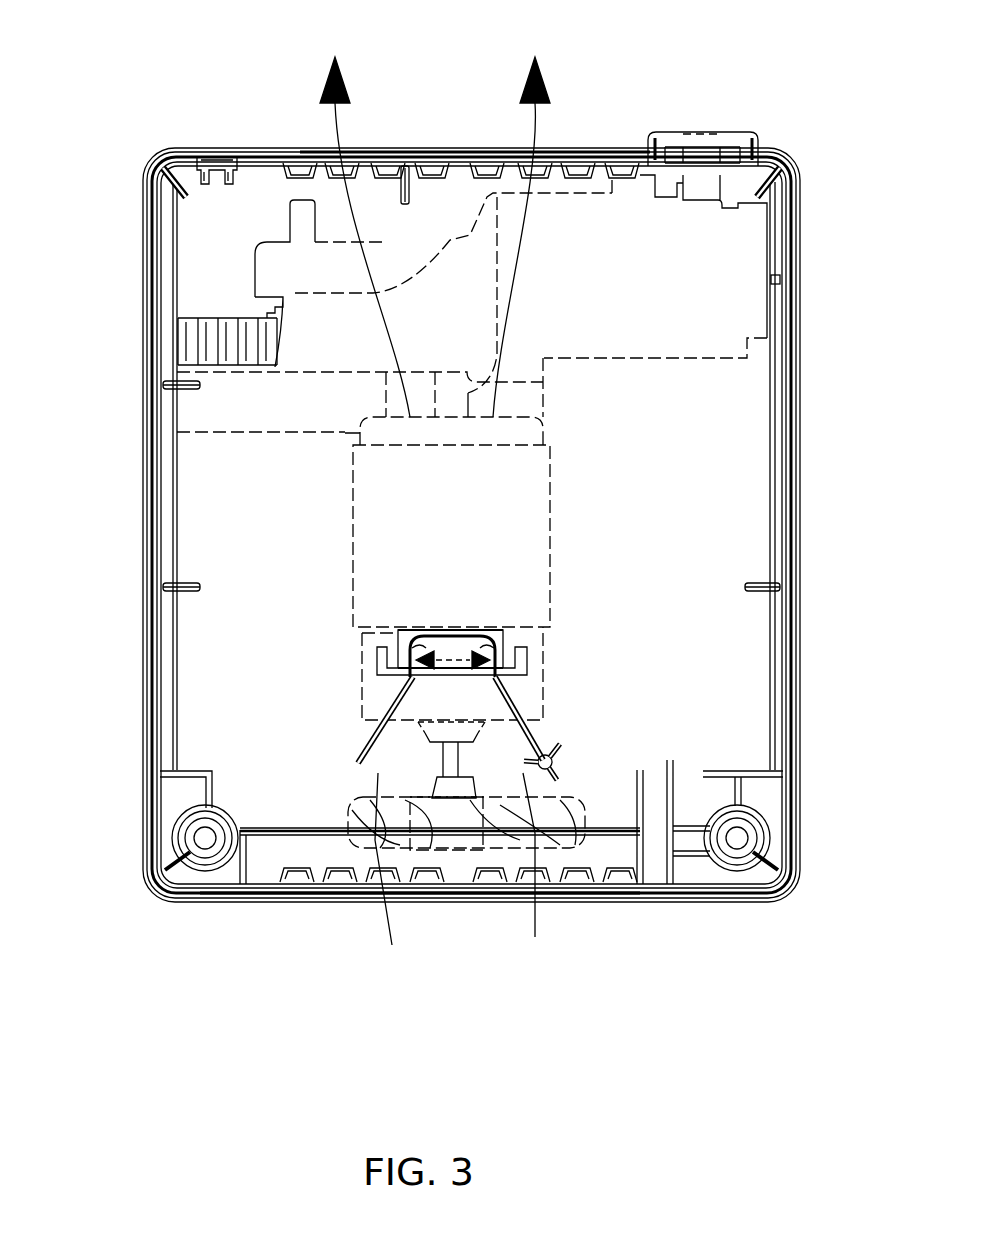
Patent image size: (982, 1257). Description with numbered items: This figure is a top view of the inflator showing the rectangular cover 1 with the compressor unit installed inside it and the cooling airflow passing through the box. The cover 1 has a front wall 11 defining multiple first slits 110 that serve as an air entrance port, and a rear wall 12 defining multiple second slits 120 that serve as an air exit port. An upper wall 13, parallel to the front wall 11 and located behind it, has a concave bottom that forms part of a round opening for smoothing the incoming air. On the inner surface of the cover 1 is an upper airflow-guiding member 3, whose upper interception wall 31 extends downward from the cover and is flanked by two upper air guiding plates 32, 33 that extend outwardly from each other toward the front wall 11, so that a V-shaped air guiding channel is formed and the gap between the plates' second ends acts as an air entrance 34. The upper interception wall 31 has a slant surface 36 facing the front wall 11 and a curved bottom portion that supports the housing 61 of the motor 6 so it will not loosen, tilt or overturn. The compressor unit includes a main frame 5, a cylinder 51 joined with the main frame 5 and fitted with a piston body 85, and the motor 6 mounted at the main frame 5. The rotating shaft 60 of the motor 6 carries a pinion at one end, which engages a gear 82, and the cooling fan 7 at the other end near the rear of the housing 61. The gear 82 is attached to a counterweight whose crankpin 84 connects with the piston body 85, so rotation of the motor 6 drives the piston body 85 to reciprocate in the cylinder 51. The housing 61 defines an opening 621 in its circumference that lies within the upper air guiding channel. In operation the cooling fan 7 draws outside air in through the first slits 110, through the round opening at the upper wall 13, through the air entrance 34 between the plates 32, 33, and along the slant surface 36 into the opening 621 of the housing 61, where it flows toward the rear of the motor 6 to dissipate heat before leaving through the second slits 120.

The cover 1 is at (801, 560).
The front wall 11 is at (220, 890).
The first slits 110 is at (300, 880).
The rear wall 12 is at (410, 155).
The second slits 120 is at (488, 167).
The upper wall 13 is at (215, 797).
The upper airflow-guiding member 3 is at (383, 662).
The upper interception wall 31 is at (450, 630).
The upper air guiding plate 32 is at (362, 752).
The upper air guiding plate 33 is at (450, 758).
The air entrance 34 is at (417, 748).
The slant surface 36 is at (447, 667).
The main frame 5 is at (247, 415).
The cylinder 51 is at (583, 277).
The motor 6 is at (390, 533).
The rotating shaft 60 is at (560, 752).
The housing 61 is at (540, 653).
The opening 621 is at (380, 628).
The cooling fan 7 is at (607, 830).
The gear 82 is at (230, 340).
The crankpin 84 is at (283, 262).
The piston body 85 is at (205, 183).